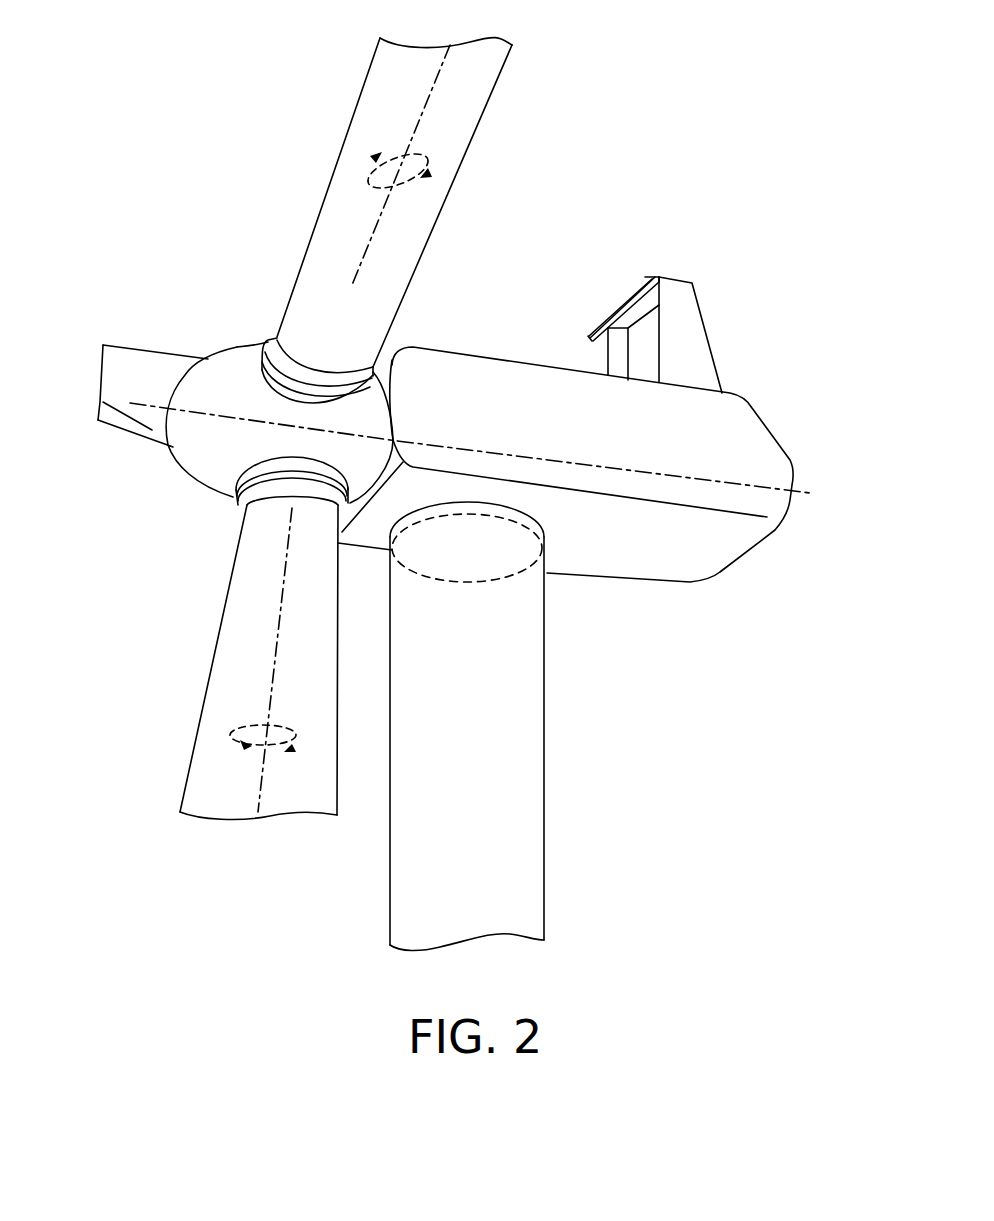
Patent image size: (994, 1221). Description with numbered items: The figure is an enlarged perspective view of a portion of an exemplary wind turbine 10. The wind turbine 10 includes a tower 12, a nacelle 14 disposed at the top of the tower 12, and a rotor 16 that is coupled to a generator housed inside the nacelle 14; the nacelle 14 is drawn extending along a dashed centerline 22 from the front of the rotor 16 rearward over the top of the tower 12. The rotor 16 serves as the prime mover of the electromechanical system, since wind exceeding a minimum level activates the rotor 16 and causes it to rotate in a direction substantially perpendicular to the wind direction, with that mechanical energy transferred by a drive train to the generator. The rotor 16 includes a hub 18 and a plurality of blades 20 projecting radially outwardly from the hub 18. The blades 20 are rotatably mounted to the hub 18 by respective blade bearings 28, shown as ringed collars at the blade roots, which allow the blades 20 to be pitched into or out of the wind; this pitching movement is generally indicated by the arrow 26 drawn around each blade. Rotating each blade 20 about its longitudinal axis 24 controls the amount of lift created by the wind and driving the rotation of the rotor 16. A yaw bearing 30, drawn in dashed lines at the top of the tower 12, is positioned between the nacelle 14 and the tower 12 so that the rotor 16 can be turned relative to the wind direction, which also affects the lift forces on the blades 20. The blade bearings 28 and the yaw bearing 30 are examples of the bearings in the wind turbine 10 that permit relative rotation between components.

The wind turbine 10 is at (178, 130).
The tower 12 is at (523, 722).
The nacelle 14 is at (747, 400).
The rotor 16 is at (188, 468).
The hub 18 is at (222, 358).
The blades 20 is at (490, 100).
The rotor axis 22 is at (498, 450).
The longitudinal axis 24 is at (375, 216).
The arrow 26 is at (357, 168).
The blade bearings 28 is at (282, 332).
The yaw bearing 30 is at (513, 577).